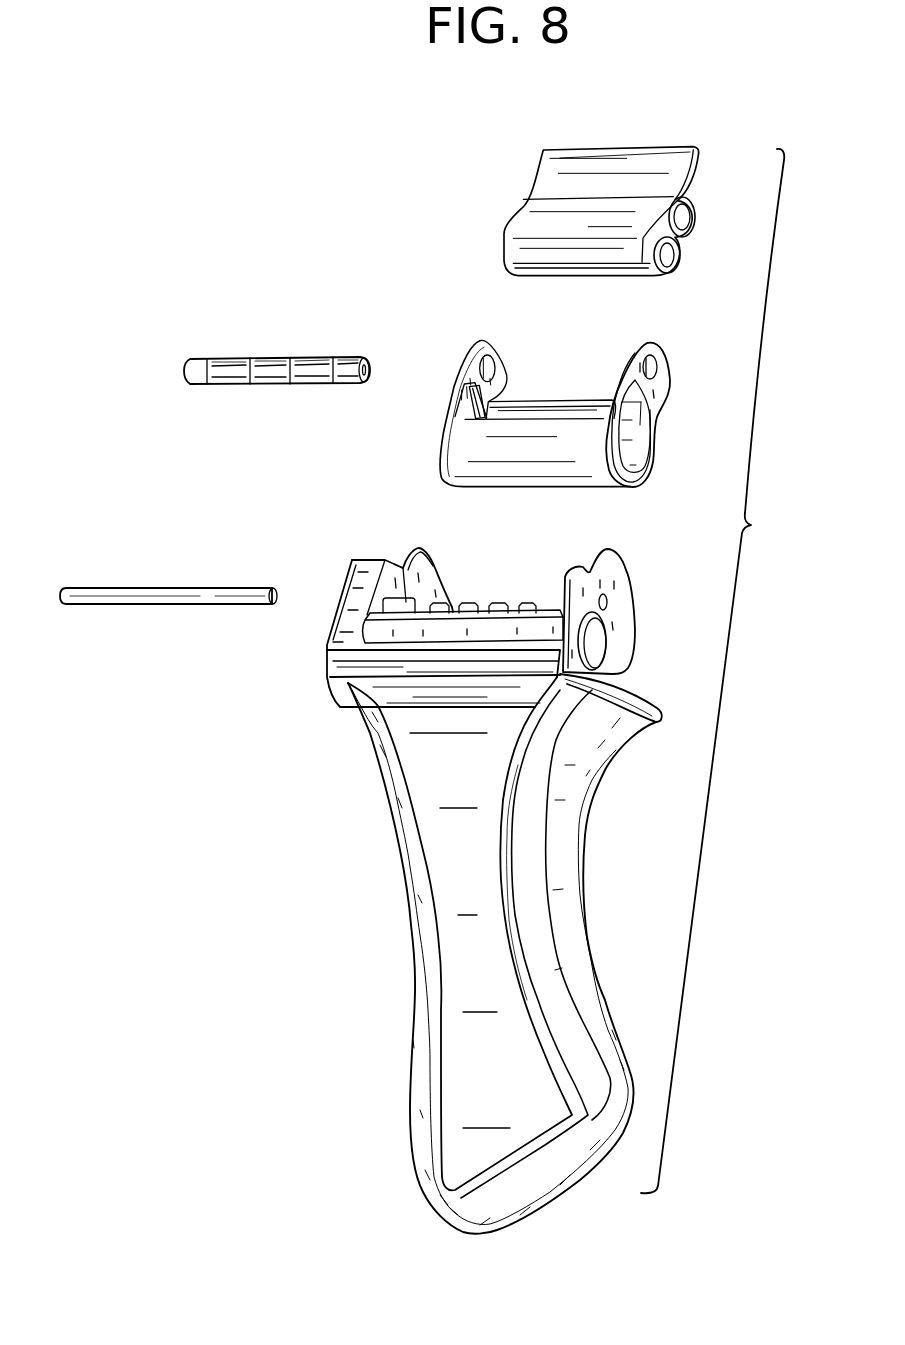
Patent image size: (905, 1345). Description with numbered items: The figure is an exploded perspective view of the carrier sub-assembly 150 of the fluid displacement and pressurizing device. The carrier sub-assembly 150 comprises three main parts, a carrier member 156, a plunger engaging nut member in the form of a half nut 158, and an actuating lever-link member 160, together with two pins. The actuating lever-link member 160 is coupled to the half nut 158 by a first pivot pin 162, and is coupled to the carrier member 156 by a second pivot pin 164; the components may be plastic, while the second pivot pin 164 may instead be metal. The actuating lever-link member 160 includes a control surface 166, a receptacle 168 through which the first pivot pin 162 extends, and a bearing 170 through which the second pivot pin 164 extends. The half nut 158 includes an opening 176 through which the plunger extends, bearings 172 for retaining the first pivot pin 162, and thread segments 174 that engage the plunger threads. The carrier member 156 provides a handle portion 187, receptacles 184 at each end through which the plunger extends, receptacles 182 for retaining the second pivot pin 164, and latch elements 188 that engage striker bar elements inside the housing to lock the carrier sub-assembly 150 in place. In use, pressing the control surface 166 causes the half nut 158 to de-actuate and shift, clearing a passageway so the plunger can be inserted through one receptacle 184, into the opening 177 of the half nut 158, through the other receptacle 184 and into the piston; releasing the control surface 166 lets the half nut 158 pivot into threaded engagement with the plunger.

The carrier sub-assembly 150 is at (715, 671).
The carrier member 156 is at (488, 873).
The half nut 158 is at (520, 419).
The actuating lever-link member 160 is at (567, 178).
The first pivot pin 162 is at (261, 337).
The second pivot pin 164 is at (147, 583).
The control surface 166 is at (617, 165).
The receptacle 168 is at (690, 217).
The bearing 170 is at (680, 259).
The bearings 172 is at (492, 367).
The thread segments 174 is at (628, 455).
The opening 176 is at (648, 440).
The opening 177 is at (470, 416).
The receptacles 182 is at (450, 600).
The receptacles 184 is at (592, 640).
The handle portion 187 is at (448, 910).
The latch elements 188 is at (496, 603).